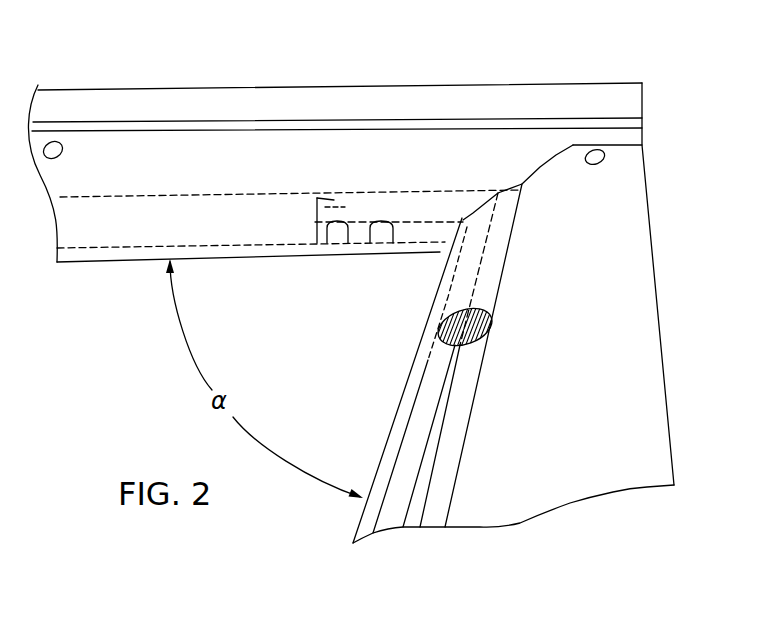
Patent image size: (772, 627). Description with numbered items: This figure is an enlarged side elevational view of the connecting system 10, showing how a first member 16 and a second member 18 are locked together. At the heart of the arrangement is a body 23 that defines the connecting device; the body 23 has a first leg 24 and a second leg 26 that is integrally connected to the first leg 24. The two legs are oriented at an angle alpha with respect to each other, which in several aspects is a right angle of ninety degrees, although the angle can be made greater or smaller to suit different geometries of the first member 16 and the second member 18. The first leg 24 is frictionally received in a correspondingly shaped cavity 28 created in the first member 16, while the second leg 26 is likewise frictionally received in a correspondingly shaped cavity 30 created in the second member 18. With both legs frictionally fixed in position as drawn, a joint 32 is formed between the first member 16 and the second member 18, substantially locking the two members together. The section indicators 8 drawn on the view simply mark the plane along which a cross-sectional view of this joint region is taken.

The connecting system 10 is at (405, 197).
The first member 16 is at (180, 103).
The second member 18 is at (638, 234).
The body 23 is at (443, 250).
The first leg 24 is at (315, 207).
The second leg 26 is at (440, 328).
The cavity 28 is at (272, 233).
The cavity 30 is at (433, 398).
The joint 32 is at (622, 144).
The section line 8 is at (332, 285).